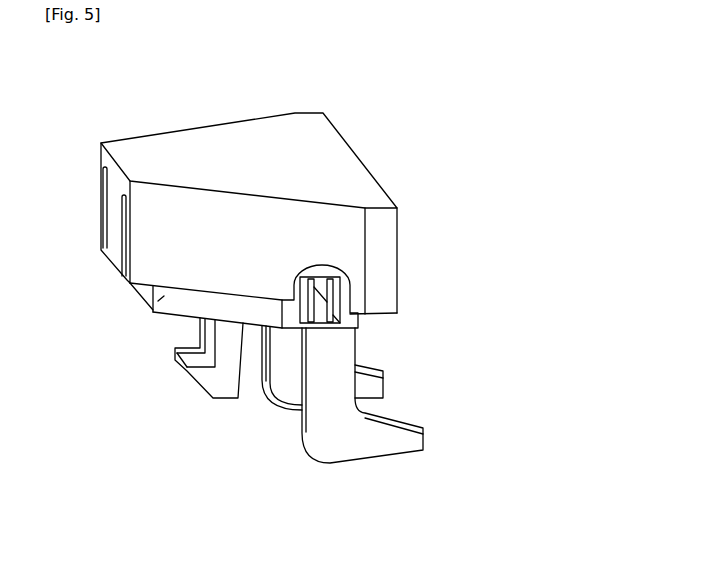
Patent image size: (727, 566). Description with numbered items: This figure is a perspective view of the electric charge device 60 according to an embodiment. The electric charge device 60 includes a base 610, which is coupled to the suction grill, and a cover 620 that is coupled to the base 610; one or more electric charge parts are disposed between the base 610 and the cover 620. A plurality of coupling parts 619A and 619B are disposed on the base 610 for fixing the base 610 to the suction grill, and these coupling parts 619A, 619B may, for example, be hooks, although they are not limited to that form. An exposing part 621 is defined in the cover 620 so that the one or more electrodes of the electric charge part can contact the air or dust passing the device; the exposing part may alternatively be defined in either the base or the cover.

The electric charge device 60 is at (232, 96).
The base 610 is at (150, 306).
The cover 620 is at (355, 170).
The exposing part 621 is at (352, 286).
The coupling part 619A is at (217, 382).
The coupling part 619B is at (357, 443).